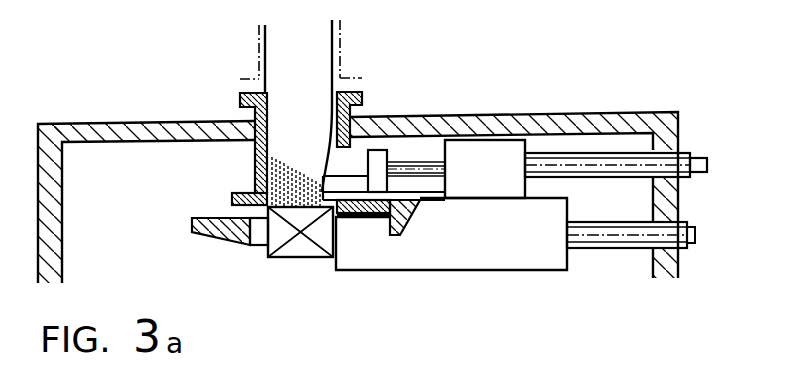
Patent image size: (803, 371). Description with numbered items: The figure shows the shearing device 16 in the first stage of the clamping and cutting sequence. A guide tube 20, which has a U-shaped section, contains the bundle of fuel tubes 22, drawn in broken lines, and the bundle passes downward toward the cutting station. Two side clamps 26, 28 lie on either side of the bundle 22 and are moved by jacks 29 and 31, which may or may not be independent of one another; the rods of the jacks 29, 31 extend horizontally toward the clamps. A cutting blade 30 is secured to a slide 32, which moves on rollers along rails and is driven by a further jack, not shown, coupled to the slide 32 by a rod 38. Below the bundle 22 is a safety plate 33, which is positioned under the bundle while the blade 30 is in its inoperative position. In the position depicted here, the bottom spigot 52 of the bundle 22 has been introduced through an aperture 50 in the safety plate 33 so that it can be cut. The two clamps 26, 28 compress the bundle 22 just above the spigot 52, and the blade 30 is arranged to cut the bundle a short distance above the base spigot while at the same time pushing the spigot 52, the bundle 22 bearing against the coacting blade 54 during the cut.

The shearing device 16 is at (126, 84).
The guide tube 20 is at (257, 146).
The bundle of fuel tubes 22 is at (291, 93).
The side clamp 26 is at (437, 196).
The side clamp 28 is at (374, 150).
The jack 29 is at (552, 162).
The cutting blade 30 is at (358, 216).
The jack 31 is at (695, 165).
The slide 32 is at (497, 246).
The safety plate 33 is at (212, 233).
The rod 38 is at (602, 235).
The aperture 50 is at (258, 238).
The bottom spigot 52 is at (298, 247).
The coacting blade 54 is at (238, 195).